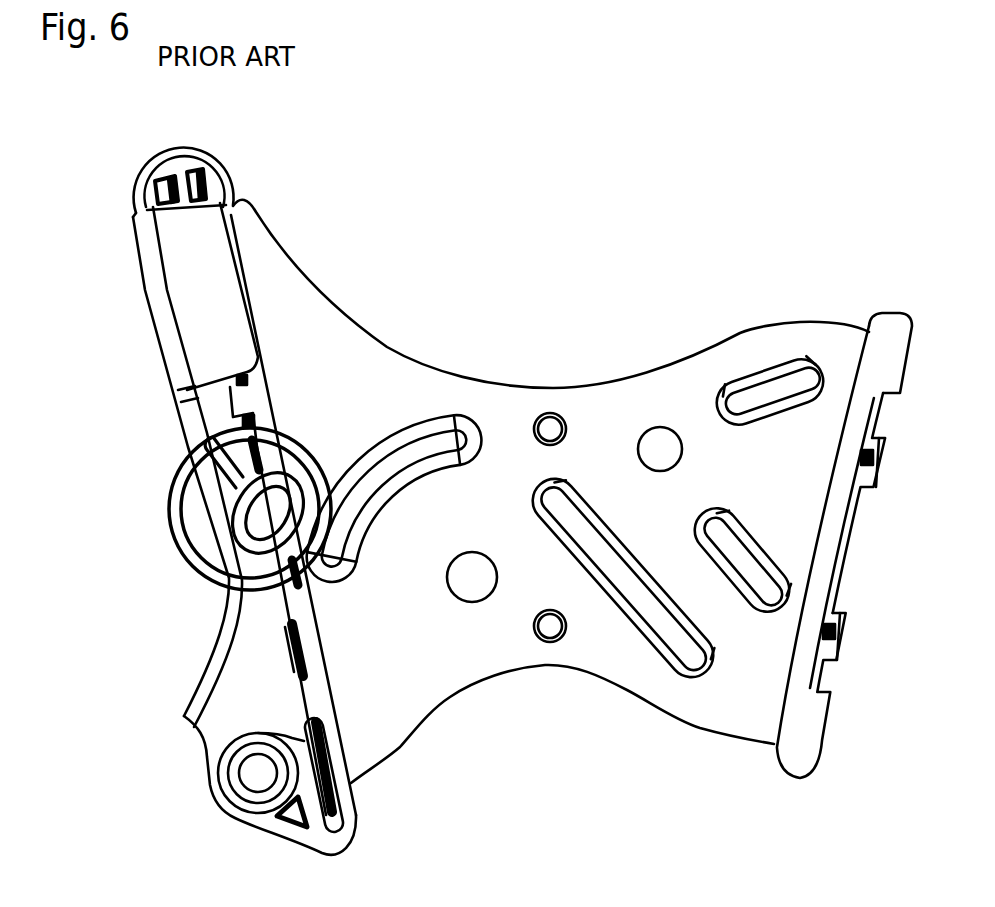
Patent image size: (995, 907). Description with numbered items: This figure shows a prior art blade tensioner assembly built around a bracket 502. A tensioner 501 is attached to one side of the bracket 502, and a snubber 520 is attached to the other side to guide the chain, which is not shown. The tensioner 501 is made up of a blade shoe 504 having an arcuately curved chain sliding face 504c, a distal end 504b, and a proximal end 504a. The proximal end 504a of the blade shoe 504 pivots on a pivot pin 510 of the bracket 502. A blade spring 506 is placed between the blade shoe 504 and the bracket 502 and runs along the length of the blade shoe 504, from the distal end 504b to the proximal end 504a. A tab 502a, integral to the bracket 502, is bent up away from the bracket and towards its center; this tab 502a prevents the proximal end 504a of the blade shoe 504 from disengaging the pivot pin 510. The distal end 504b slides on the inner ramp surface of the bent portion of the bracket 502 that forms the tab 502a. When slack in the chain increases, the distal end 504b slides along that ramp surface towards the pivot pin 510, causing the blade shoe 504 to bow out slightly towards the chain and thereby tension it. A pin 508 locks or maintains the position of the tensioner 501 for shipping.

The tensioner 501 is at (110, 212).
The bracket 502 is at (392, 367).
The tab 502a is at (197, 300).
The blade shoe 504 is at (157, 173).
The proximal end 504a is at (333, 838).
The distal end 504b is at (198, 167).
The chain sliding face 504c is at (321, 652).
The blade spring 506 is at (288, 653).
The pin 508 is at (197, 549).
The pivot pin 510 is at (263, 773).
The snubber 520 is at (892, 337).